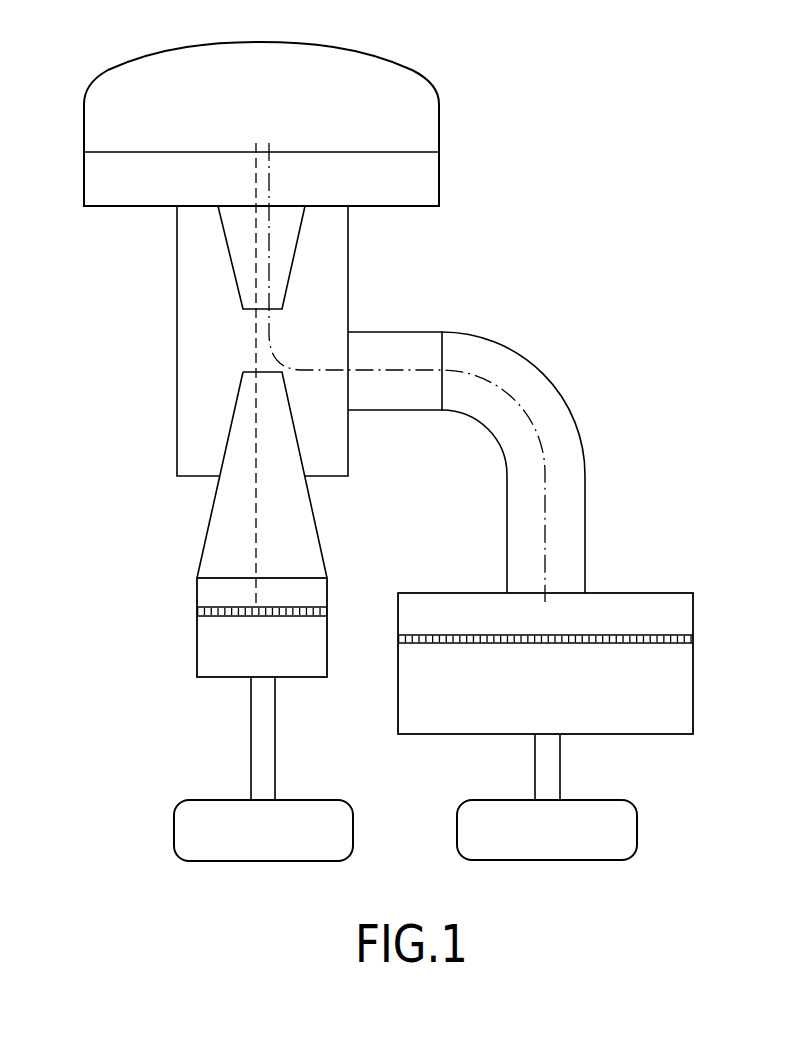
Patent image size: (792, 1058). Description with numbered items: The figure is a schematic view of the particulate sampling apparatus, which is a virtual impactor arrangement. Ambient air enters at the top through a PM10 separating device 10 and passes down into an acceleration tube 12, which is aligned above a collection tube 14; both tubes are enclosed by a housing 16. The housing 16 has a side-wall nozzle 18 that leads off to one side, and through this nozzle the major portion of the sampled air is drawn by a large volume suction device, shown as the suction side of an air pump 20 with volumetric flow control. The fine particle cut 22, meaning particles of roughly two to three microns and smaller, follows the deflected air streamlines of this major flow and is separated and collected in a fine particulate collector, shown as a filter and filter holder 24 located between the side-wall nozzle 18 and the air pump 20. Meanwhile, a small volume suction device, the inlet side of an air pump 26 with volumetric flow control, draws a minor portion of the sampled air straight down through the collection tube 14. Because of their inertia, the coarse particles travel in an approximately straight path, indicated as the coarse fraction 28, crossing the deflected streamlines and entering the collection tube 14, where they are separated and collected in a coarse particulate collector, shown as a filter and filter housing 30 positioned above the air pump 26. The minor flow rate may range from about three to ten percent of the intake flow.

The PM10 separating device 10 is at (439, 128).
The acceleration tube 12 is at (230, 258).
The collection tube 14 is at (236, 403).
The housing 16 is at (177, 340).
The side-wall nozzle 18 is at (395, 332).
The air pump 20 is at (637, 828).
The fine particle cut 22 is at (585, 520).
The filter and filter holder 24 is at (693, 670).
The air pump 26 is at (174, 832).
The coarse fraction 28 is at (256, 427).
The filter and filter housing 30 is at (278, 663).